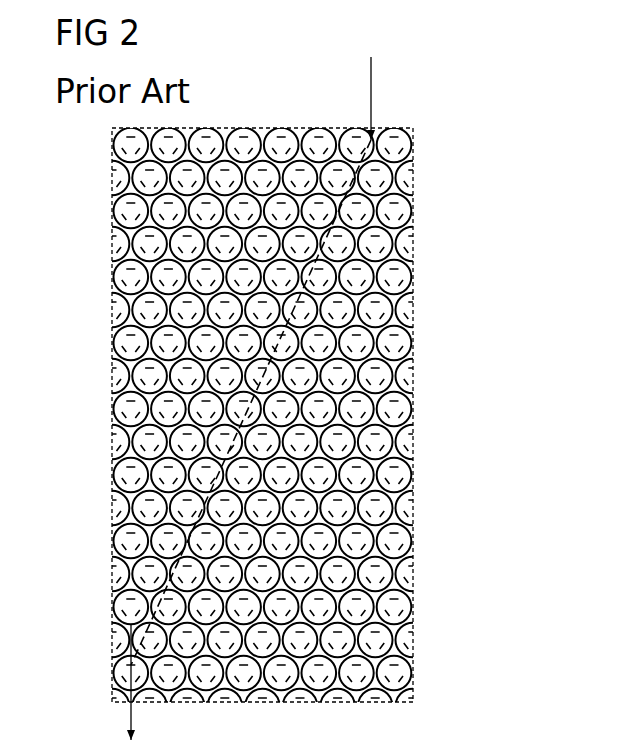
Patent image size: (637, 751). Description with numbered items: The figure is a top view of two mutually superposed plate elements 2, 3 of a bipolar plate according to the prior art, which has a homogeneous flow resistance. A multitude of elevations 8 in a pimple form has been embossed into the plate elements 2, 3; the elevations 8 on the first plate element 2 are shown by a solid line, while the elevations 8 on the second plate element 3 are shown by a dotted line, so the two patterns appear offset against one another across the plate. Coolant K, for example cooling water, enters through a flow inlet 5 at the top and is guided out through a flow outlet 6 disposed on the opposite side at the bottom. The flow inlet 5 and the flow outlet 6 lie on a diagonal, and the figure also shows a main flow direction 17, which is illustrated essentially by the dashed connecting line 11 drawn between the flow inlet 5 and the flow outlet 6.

The first plate element 2 is at (281, 399).
The second plate element 3 is at (413, 483).
The flow inlet 5 is at (371, 97).
The flow outlet 6 is at (128, 712).
The elevations 8 is at (408, 268).
The connecting line 11 is at (324, 402).
The main flow direction 17 is at (345, 247).